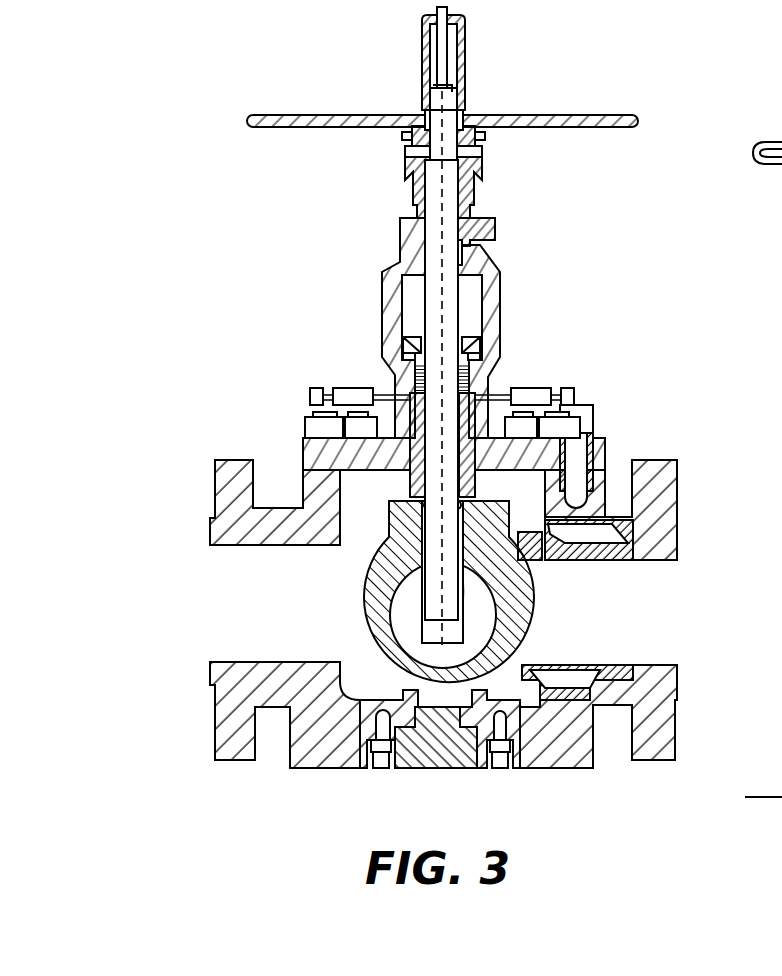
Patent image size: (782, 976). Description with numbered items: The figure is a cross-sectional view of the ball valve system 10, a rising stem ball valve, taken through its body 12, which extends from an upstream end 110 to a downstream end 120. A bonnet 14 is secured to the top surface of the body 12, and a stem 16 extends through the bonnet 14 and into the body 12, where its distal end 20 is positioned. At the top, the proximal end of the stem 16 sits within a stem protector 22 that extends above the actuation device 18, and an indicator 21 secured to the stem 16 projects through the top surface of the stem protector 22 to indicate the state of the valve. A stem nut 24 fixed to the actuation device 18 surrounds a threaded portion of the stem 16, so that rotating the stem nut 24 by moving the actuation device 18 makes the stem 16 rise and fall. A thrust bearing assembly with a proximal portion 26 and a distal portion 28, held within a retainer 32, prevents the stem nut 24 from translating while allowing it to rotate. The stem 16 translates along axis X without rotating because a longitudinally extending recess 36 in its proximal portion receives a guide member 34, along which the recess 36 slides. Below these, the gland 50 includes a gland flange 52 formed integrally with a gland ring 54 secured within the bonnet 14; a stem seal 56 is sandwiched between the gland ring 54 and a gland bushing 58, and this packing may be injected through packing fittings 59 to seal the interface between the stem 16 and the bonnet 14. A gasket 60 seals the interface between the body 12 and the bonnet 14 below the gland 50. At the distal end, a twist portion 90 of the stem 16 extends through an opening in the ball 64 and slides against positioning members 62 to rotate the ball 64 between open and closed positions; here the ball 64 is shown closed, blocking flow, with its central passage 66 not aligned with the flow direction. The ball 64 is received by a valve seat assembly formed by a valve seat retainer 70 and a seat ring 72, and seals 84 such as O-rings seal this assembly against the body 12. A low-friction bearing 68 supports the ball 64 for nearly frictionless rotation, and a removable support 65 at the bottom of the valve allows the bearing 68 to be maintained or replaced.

The ball valve system 10 is at (268, 93).
The body 12 is at (668, 462).
The bonnet 14 is at (595, 447).
The stem 16 is at (462, 310).
The actuation device 18 is at (475, 113).
The distal end 20 is at (460, 652).
The indicator 21 is at (447, 66).
The stem protector 22 is at (425, 68).
The stem nut 24 is at (430, 108).
The proximal portion 26 is at (410, 140).
The distal portion 28 is at (413, 170).
The retainer 32 is at (410, 156).
The guide member 34 is at (495, 228).
The recess 36 is at (462, 250).
The gland 50 is at (277, 264).
The gland flange 52 is at (410, 338).
The gland ring 54 is at (415, 356).
The stem seal 56 is at (418, 374).
The gland bushing 58 is at (410, 430).
The packing fitting 59 is at (336, 393).
The gasket 60 is at (337, 476).
The positioning member 62 is at (460, 500).
The ball 64 is at (377, 672).
The removable support 65 is at (432, 758).
The passage 66 is at (475, 592).
The bearing 68 is at (430, 717).
The valve seat retainer 70 is at (552, 697).
The seat ring 72 is at (518, 682).
The seal 84 is at (630, 668).
The twist portion 90 is at (475, 513).
The upstream end 110 is at (210, 537).
The downstream end 120 is at (677, 685).